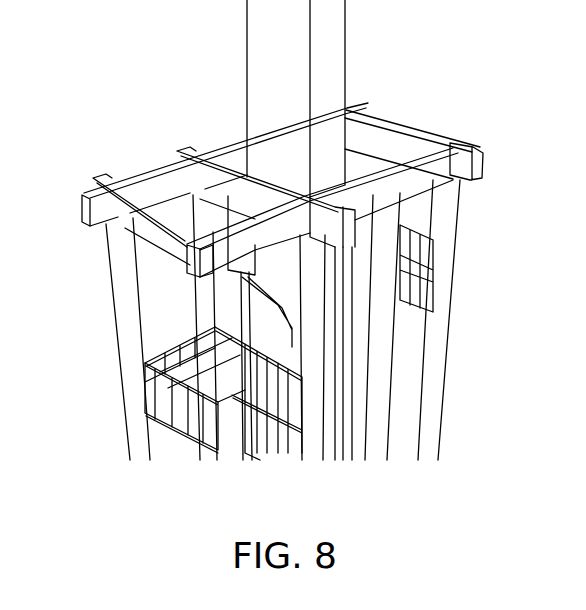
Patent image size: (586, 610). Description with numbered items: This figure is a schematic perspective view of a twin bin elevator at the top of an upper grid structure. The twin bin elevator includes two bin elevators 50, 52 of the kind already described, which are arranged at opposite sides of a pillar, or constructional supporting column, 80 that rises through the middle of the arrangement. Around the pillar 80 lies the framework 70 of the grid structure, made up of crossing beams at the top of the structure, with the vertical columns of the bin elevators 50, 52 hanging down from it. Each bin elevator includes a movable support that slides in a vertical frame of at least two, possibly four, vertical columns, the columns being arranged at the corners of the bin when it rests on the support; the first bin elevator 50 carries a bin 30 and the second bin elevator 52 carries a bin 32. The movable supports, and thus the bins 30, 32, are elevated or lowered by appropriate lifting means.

The pillar 80 is at (345, 32).
The framework 70 is at (420, 136).
The bin elevator 50 is at (112, 277).
The bin elevator 52 is at (460, 235).
The bin 30 is at (183, 334).
The bin 32 is at (412, 303).